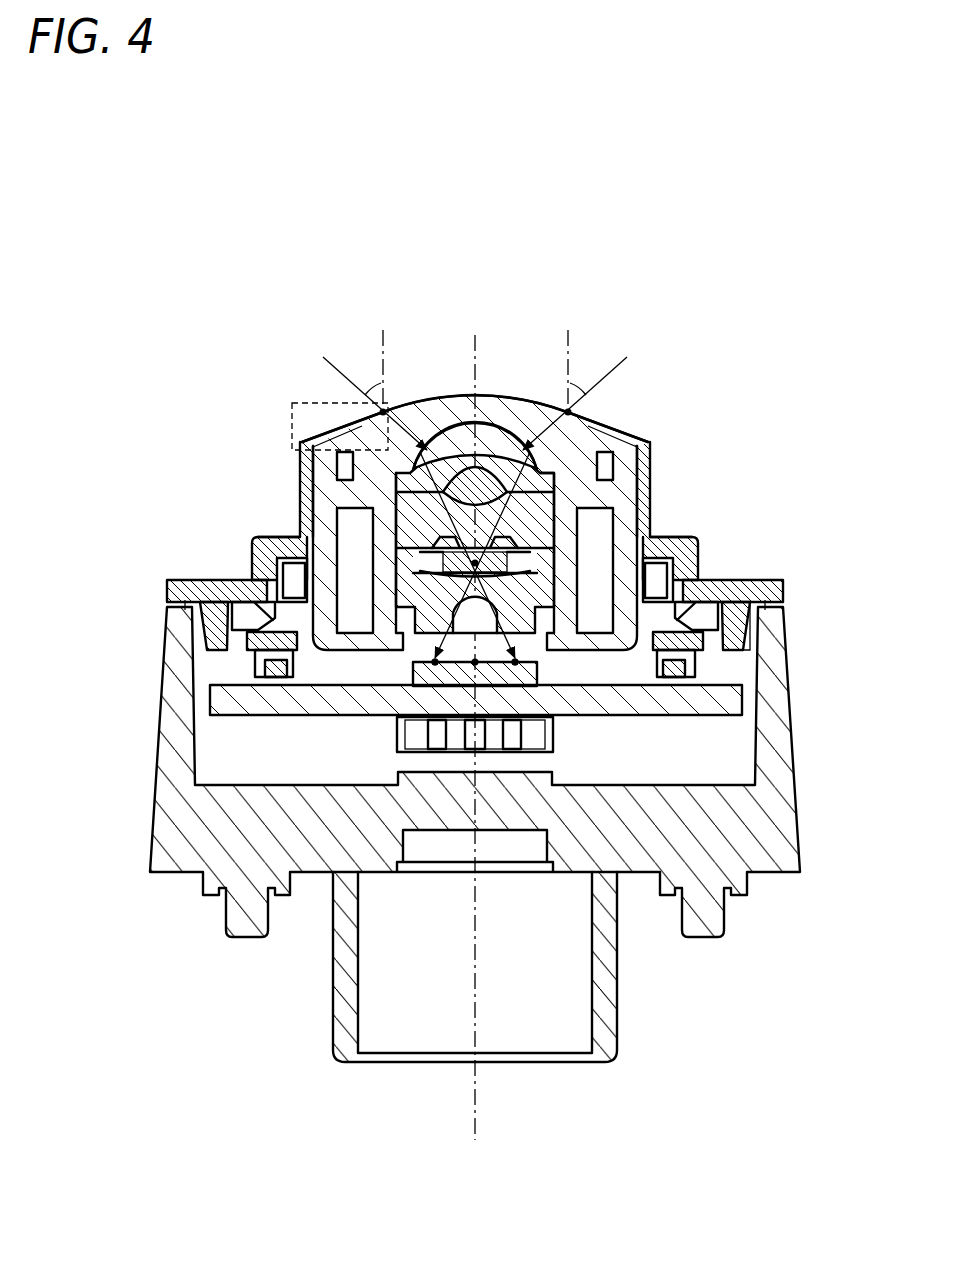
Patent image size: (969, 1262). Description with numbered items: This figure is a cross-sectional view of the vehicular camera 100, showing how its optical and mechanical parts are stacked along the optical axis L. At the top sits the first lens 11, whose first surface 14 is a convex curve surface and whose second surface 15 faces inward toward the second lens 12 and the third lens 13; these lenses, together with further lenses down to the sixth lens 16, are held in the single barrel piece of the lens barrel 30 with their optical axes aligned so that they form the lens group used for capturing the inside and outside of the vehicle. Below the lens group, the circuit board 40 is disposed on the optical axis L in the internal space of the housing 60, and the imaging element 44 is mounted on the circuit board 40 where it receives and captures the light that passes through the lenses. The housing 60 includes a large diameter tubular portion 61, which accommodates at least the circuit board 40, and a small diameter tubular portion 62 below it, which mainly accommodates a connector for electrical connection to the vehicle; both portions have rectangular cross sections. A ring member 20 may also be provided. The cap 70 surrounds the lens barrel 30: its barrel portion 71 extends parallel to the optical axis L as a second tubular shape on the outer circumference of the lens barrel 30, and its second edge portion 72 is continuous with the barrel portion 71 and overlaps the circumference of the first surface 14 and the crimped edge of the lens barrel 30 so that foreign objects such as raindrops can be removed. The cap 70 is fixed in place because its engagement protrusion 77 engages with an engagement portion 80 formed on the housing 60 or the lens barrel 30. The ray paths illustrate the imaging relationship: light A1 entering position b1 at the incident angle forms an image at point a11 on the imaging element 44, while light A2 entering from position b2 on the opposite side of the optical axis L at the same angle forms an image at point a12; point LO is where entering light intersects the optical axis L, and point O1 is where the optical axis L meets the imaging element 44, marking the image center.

The vehicular camera 100 is at (484, 631).
The first lens 11 is at (475, 373).
The second lens 12 is at (500, 445).
The third lens 13 is at (560, 504).
The first surface 14 is at (491, 398).
The second surface 15 is at (418, 432).
The sixth lens 16 is at (253, 540).
The ring member 20 is at (175, 578).
The lens barrel 30 is at (624, 463).
The circuit board 40 is at (222, 700).
The imaging element 44 is at (538, 678).
The housing 60 is at (484, 631).
The large diameter tubular portion 61 is at (148, 858).
The small diameter tubular portion 62 is at (335, 995).
The cap 70 is at (484, 631).
The barrel portion 71 is at (302, 490).
The second edge portion 72 is at (336, 432).
The engagement protrusion 77 is at (702, 610).
The engagement portion 80 is at (692, 592).
The optical axis L is at (476, 742).
The point LO is at (568, 570).
The point O1 is at (553, 735).
The light A1 is at (407, 493).
The light A2 is at (543, 493).
The point a11 is at (522, 660).
The point a12 is at (430, 662).
The position b1 is at (381, 411).
The position b2 is at (567, 411).